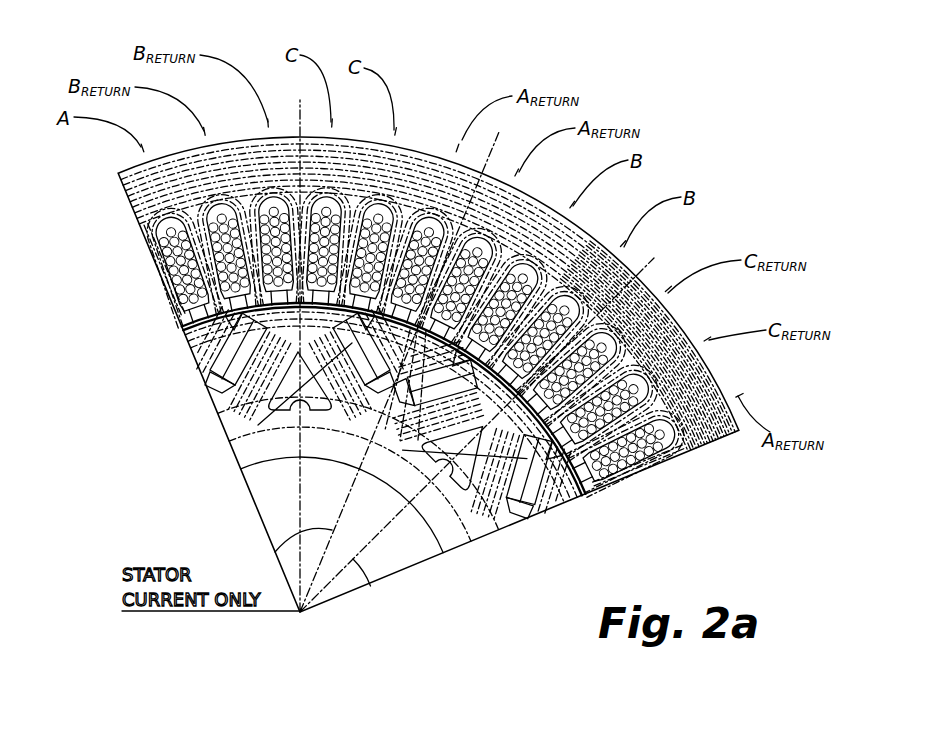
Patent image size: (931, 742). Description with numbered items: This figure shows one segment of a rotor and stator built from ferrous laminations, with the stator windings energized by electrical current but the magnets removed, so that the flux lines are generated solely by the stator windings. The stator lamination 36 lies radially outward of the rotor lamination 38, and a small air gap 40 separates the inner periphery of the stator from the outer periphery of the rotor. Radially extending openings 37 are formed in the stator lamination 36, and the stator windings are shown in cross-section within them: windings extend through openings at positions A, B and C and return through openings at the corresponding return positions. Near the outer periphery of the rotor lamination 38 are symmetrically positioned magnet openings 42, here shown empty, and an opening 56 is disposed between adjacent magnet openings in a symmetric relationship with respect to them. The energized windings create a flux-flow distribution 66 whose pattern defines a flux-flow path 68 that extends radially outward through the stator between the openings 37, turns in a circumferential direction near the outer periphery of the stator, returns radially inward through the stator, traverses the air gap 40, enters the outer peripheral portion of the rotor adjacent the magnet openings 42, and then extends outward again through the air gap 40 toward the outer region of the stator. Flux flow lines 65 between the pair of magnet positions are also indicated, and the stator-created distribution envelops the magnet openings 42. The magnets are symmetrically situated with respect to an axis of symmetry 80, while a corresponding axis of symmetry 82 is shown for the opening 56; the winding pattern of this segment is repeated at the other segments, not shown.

The stator lamination 36 is at (699, 452).
The radially extending openings 37 is at (328, 197).
The rotor lamination 38 is at (500, 537).
The air gap 40 is at (584, 490).
The magnet openings 42 is at (236, 441).
The opening 56 is at (252, 472).
The flux flow lines 65 is at (222, 388).
The flux-flow distribution 66 is at (386, 150).
The flux-flow path 68 is at (262, 190).
The axis of symmetry 80 is at (276, 557).
The axis of symmetry for the openings 82 is at (382, 595).